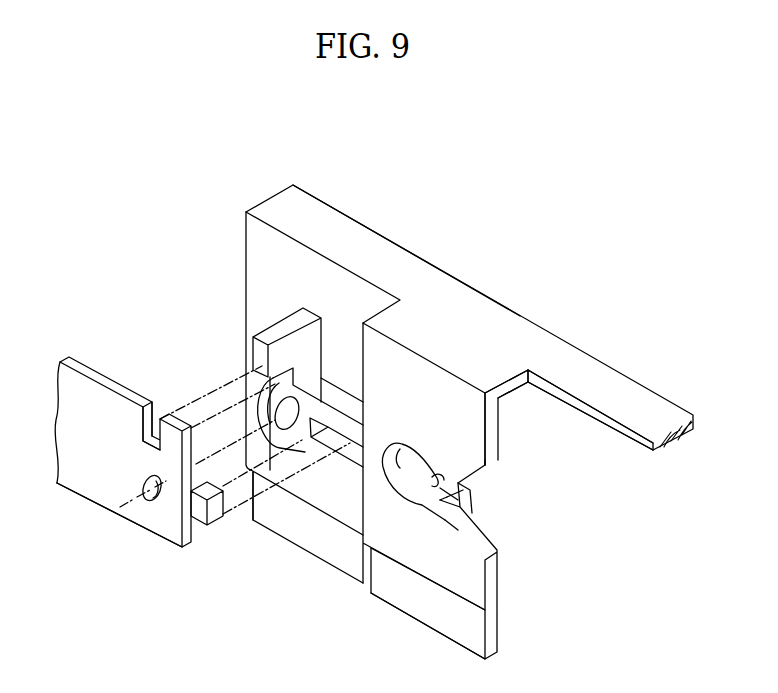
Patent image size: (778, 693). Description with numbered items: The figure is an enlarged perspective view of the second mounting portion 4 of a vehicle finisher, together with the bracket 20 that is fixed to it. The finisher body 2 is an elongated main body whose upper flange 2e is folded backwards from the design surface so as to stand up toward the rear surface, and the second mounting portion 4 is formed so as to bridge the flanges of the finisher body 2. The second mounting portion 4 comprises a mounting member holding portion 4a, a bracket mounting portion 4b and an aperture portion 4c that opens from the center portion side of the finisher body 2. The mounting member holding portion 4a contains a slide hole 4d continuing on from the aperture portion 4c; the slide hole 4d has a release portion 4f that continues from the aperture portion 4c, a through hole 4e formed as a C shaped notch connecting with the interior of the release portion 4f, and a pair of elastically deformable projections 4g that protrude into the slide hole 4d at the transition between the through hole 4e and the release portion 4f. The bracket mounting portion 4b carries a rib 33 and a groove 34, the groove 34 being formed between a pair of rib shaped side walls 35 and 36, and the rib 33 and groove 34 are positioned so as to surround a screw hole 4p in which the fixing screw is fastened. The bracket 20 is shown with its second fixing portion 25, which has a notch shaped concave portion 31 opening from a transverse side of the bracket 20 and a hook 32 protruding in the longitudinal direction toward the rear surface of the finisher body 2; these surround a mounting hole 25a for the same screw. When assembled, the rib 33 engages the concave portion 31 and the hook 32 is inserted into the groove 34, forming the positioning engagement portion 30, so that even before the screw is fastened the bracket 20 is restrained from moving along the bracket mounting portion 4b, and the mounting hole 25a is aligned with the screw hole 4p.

The finisher body 2 is at (430, 259).
The upper flange 2e is at (497, 316).
The second mounting portion 4 is at (498, 582).
The mounting member holding portion 4a is at (415, 553).
The bracket mounting portion 4b is at (285, 470).
The aperture portion 4c is at (508, 418).
The slide hole 4d is at (458, 473).
The through hole 4e is at (400, 447).
The release portion 4f is at (480, 472).
The projections 4g is at (437, 476).
The screw hole 4p is at (270, 462).
The bracket 20 is at (108, 378).
The second fixing portion 25 is at (83, 472).
The mounting hole 25a is at (150, 500).
The positioning engagement portion 30 is at (325, 300).
The concave portion 31 is at (162, 410).
The hook 32 is at (208, 517).
The rib 33 is at (262, 350).
The groove 34 is at (355, 472).
The side wall 35 is at (328, 415).
The side wall 36 is at (320, 472).